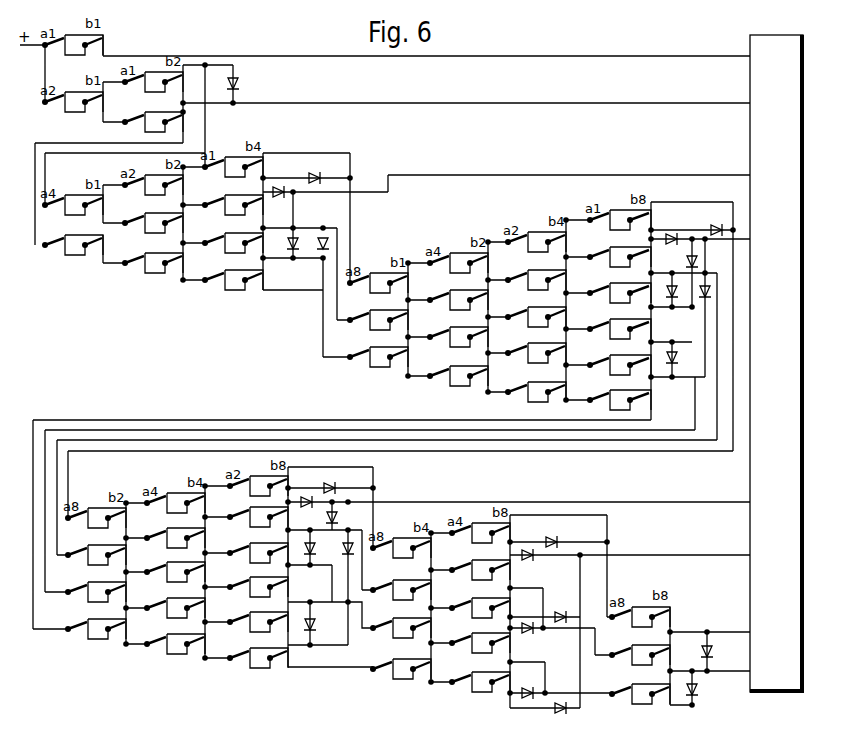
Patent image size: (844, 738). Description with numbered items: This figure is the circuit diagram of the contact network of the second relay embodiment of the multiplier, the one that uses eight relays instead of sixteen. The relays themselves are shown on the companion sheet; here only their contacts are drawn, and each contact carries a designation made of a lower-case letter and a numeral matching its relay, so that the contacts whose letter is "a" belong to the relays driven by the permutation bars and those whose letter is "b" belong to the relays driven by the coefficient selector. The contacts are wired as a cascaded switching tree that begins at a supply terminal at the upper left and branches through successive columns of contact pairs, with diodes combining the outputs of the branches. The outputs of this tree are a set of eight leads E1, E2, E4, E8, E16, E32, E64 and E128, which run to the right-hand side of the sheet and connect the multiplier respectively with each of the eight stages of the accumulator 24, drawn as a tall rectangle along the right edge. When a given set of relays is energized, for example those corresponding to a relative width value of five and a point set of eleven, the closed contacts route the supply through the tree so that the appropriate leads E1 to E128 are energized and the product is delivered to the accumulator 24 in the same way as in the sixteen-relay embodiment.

The accumulator 24 is at (774, 36).
The lead E1 is at (731, 45).
The lead E2 is at (731, 92).
The lead E4 is at (731, 164).
The lead E8 is at (745, 240).
The lead E16 is at (734, 492).
The lead E32 is at (736, 544).
The lead E64 is at (738, 620).
The lead E128 is at (738, 673).